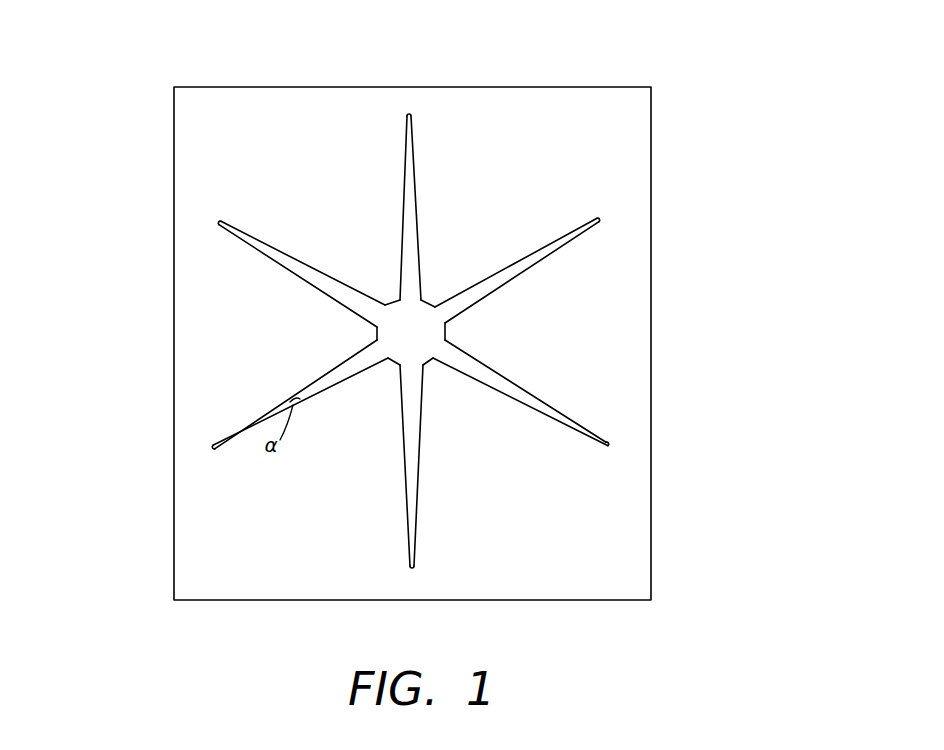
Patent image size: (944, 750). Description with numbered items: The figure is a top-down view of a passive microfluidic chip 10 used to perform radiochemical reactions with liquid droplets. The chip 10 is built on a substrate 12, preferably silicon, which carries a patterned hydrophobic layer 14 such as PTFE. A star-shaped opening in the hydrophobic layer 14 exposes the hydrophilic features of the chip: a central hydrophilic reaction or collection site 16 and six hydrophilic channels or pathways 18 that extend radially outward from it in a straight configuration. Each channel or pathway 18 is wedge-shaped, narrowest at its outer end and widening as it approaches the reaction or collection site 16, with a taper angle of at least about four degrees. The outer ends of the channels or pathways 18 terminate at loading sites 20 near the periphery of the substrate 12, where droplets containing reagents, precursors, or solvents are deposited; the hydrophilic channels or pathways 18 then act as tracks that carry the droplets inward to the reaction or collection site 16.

The passive microfluidic chip 10 is at (744, 195).
The substrate 12 is at (593, 87).
The hydrophobic layer 14 is at (573, 325).
The central hydrophilic reaction or collection site 16 is at (427, 303).
The hydrophilic channels or pathways 18 is at (417, 192).
The loading sites 20 is at (407, 118).